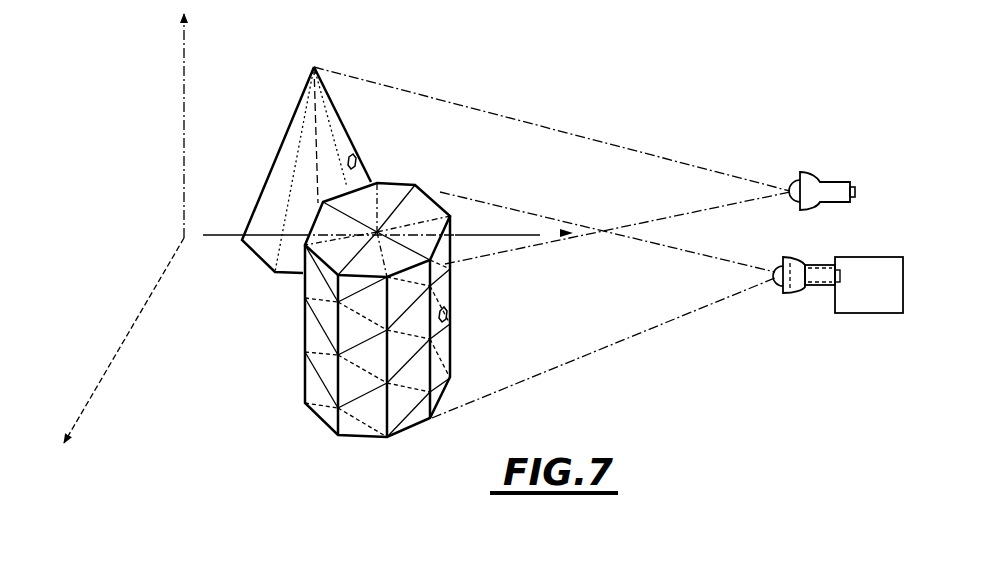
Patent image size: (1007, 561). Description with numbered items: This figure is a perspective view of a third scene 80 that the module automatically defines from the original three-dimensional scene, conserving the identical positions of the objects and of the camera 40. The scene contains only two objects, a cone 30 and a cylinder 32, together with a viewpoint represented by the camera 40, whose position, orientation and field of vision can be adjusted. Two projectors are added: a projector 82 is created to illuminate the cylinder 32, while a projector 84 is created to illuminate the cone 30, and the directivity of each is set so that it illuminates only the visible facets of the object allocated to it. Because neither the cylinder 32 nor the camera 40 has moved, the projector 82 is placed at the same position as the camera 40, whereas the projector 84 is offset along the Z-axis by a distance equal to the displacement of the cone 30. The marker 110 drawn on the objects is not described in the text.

The cone 30 is at (293, 107).
The cylinder 32 is at (440, 182).
The feature marker 110 is at (358, 162).
The third scene 80 is at (258, 312).
The projector 82 is at (793, 294).
The projector 84 is at (837, 184).
The camera 40 is at (870, 306).